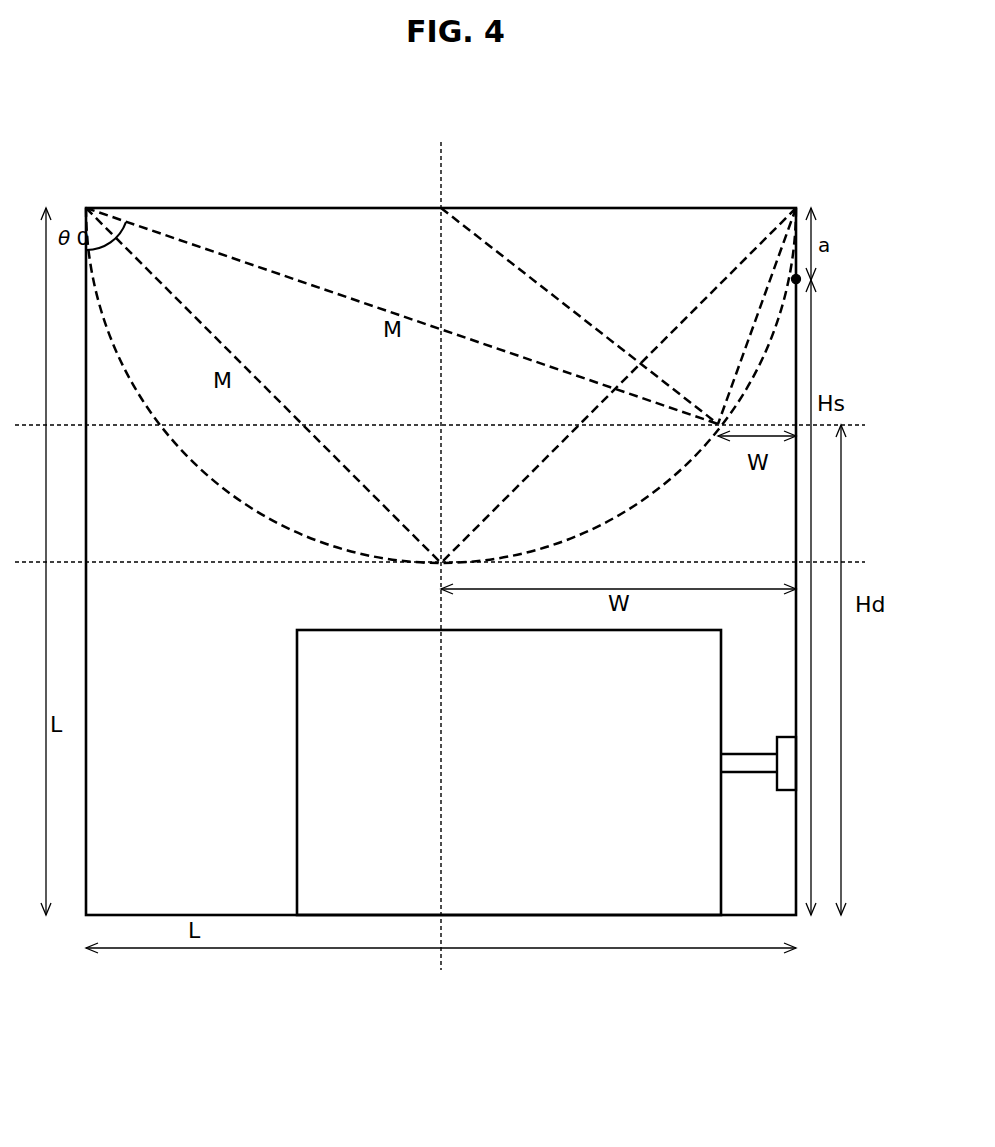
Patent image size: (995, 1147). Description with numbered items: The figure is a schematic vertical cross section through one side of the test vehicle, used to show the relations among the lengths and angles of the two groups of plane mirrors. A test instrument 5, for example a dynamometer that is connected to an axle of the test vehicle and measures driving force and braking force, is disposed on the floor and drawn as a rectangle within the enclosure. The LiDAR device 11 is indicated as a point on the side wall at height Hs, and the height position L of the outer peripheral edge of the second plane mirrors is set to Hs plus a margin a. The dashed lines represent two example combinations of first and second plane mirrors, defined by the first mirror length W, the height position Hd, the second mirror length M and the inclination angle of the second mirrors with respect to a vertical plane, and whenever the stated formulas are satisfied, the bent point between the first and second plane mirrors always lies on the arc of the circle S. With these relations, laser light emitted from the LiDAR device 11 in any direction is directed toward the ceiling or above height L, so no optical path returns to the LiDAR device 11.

The test instruments 5 is at (340, 779).
The LiDAR devices 11 is at (799, 283).
The circle S is at (672, 476).